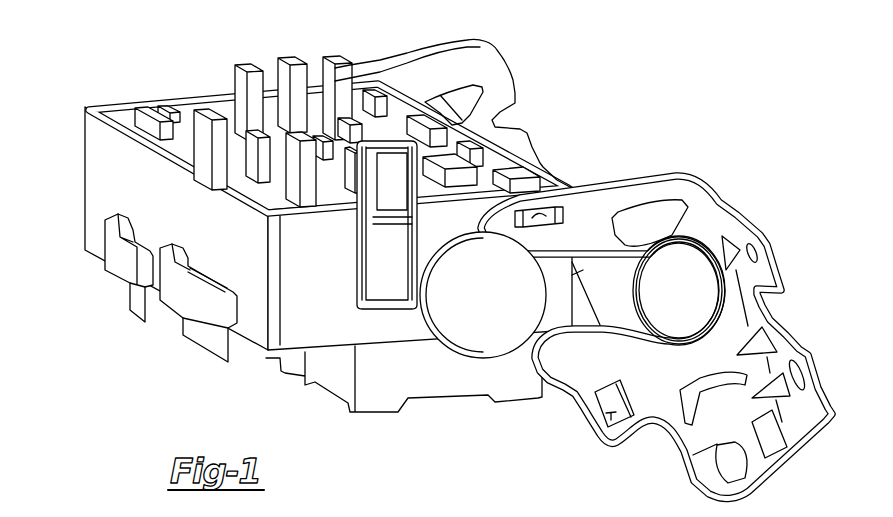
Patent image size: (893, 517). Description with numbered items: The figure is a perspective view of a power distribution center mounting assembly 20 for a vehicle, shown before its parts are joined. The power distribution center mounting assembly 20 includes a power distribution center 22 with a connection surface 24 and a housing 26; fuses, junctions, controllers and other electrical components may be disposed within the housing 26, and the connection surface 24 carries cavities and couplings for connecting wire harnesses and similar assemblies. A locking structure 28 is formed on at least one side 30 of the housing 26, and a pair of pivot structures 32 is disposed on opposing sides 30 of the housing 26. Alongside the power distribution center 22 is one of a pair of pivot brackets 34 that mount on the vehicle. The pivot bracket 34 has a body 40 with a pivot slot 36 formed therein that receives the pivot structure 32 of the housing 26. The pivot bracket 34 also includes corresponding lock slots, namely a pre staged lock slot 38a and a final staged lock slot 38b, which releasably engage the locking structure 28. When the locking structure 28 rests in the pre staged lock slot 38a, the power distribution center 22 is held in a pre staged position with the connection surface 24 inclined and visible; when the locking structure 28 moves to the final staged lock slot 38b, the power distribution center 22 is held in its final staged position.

The power distribution center mounting assembly 20 is at (434, 250).
The power distribution center 22 is at (403, 93).
The connection surface 24 is at (456, 396).
The housing 26 is at (118, 182).
The locking structure 28 is at (393, 267).
The side 30 is at (147, 100).
The pivot structure 32 is at (500, 333).
The pivot bracket 34 is at (470, 42).
The pivot slot 36 is at (684, 311).
The pre staged lock slot 38a is at (565, 217).
The final staged lock slot 38b is at (617, 417).
The body 40 is at (733, 316).